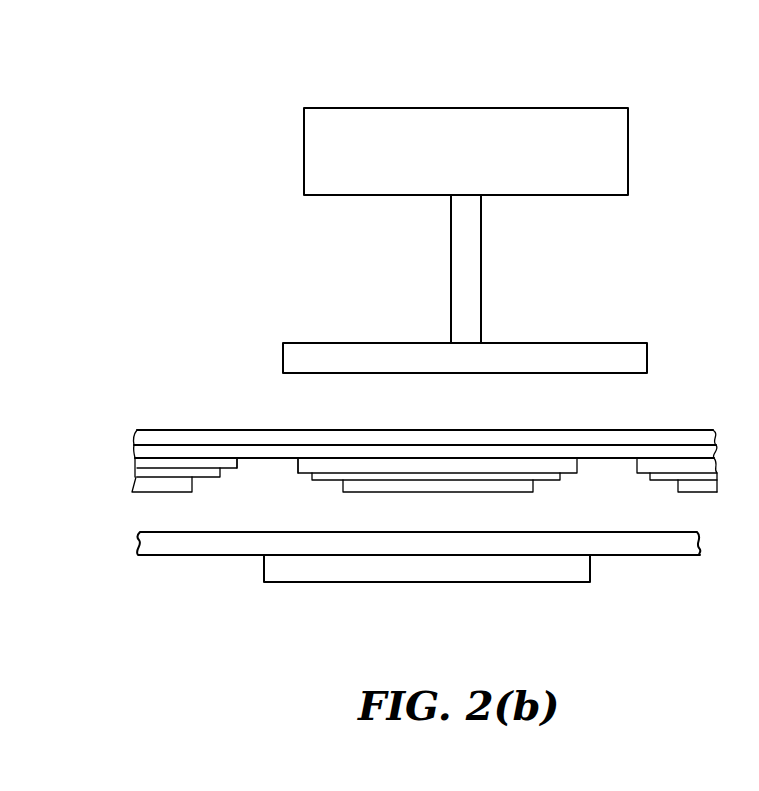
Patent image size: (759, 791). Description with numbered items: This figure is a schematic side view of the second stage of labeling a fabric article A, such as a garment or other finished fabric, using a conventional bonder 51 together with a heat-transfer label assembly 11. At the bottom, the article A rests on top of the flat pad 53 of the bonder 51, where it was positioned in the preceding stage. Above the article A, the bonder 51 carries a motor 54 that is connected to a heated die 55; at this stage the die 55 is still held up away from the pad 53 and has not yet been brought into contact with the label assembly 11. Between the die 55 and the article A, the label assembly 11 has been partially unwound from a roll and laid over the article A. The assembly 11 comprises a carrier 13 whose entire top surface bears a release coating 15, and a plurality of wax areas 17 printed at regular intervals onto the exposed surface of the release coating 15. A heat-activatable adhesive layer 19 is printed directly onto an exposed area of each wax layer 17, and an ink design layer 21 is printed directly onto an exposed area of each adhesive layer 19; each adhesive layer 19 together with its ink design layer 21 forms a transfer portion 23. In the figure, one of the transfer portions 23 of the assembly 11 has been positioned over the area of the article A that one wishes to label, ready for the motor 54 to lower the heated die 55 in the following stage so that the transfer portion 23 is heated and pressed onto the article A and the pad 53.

The bonder 51 is at (286, 84).
The motor 54 is at (583, 108).
The heated die 55 is at (592, 343).
The heat-transfer label assembly 11 is at (122, 440).
The carrier 13 is at (220, 437).
The release coating 15 is at (417, 455).
The wax area 17 is at (640, 470).
The heat-activatable adhesive layer 19 is at (320, 478).
The ink design layer 21 is at (132, 486).
The transfer portion 23 is at (267, 477).
The fabric article A is at (198, 543).
The flat pad 53 is at (315, 555).